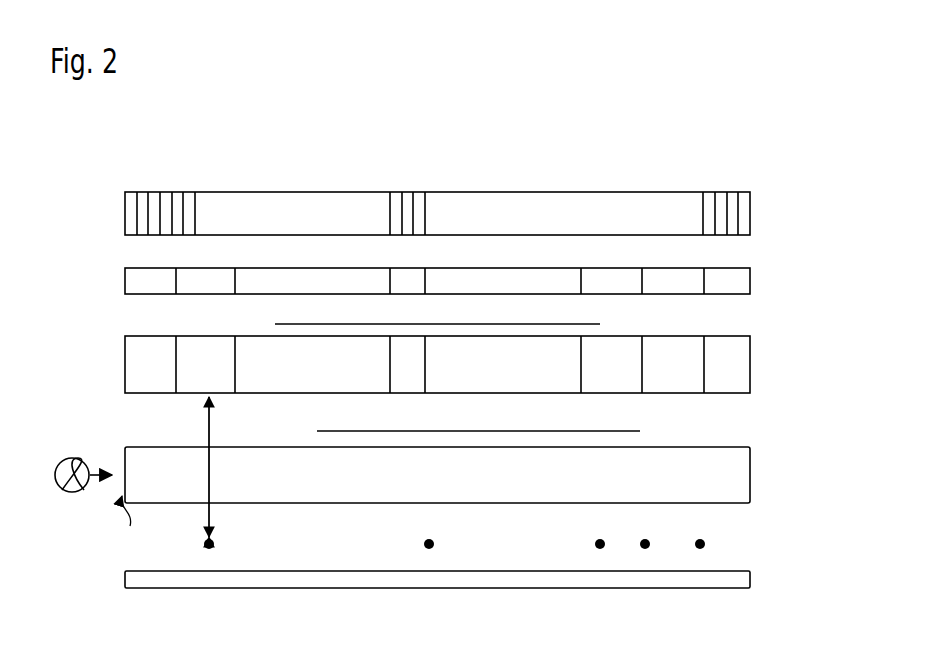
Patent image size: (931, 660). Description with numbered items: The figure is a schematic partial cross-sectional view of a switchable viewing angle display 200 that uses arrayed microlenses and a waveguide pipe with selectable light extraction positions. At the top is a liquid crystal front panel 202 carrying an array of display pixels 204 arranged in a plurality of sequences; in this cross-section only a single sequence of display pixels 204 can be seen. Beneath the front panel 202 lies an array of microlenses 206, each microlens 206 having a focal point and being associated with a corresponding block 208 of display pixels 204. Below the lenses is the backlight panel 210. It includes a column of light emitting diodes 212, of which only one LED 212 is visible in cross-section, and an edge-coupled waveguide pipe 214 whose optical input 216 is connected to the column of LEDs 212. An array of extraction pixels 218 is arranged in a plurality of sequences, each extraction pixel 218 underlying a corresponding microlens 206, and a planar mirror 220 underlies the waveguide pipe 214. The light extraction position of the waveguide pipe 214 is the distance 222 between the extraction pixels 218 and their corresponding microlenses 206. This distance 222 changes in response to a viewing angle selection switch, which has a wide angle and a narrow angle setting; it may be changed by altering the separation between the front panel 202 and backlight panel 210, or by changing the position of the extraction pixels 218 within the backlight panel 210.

The display 200 is at (180, 151).
The front panel 202 is at (752, 212).
The display pixels 204 is at (722, 192).
The microlenses 206 is at (222, 277).
The block of display pixels 208 is at (425, 190).
The backlight panel 210 is at (742, 508).
The light emitting diodes 212 is at (72, 492).
The waveguide pipe 214 is at (560, 486).
The optical input 216 is at (130, 524).
The extraction pixels 218 is at (132, 362).
The planar mirror 220 is at (590, 590).
The distance 222 is at (212, 441).